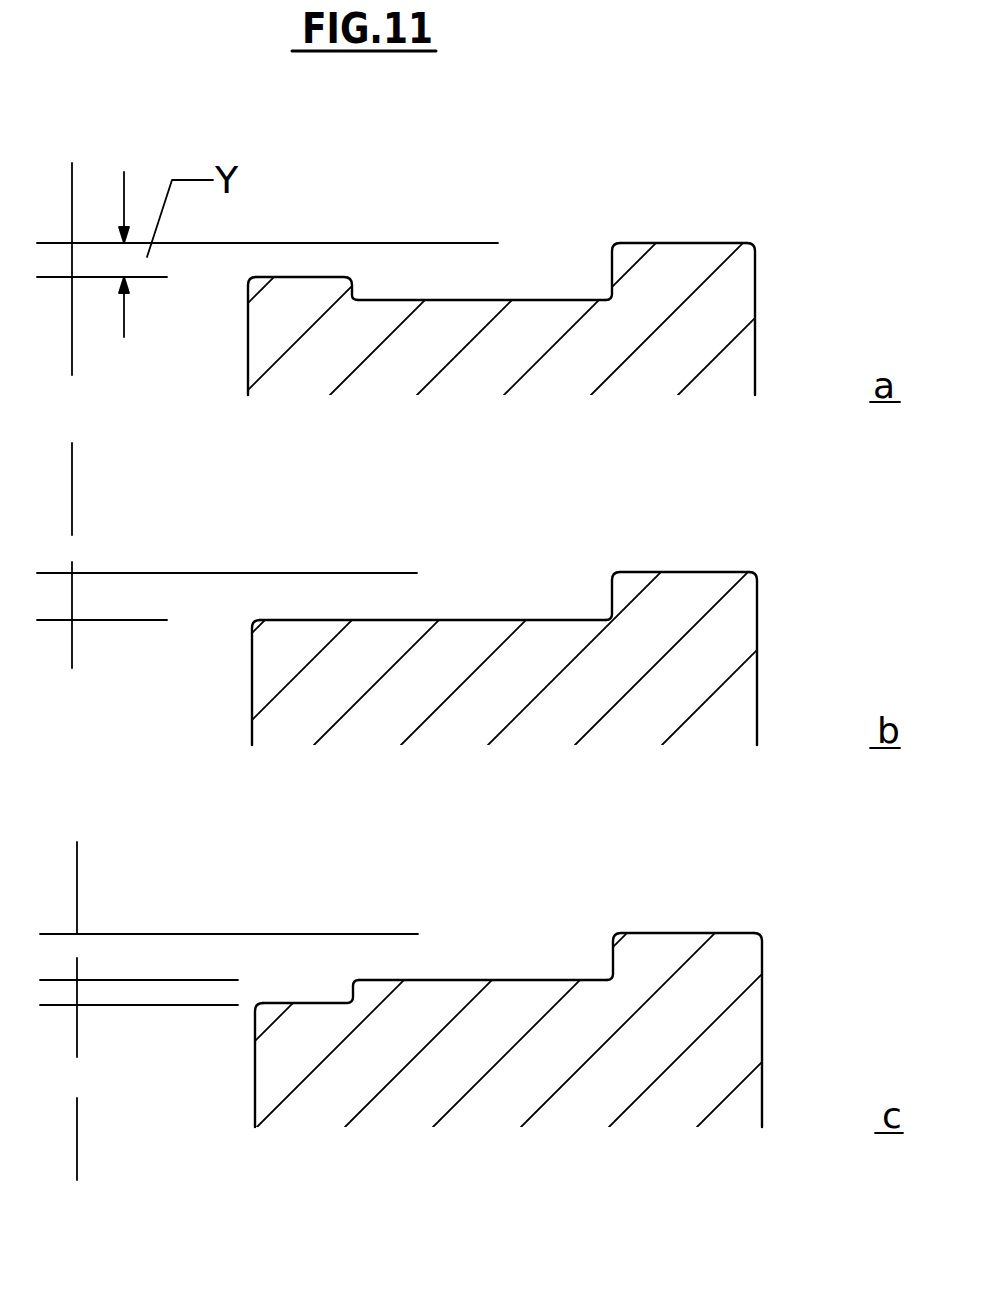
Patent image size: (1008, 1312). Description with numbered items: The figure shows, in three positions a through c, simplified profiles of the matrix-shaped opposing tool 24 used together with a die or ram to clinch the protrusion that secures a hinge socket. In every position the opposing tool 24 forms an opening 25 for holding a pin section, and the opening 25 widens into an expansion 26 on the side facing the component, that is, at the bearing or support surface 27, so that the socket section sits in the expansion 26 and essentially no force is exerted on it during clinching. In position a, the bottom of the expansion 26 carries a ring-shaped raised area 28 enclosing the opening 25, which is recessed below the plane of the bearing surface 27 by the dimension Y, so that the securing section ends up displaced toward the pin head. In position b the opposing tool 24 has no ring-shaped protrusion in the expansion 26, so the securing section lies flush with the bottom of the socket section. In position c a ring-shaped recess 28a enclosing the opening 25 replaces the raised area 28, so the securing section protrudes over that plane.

The opposing tool 24 is at (733, 305).
The opening 25 is at (197, 402).
The expansion 26 is at (508, 273).
The bearing surface 27 is at (719, 570).
The ring-shaped raised area 28 is at (343, 220).
The ring-shaped recess 28a is at (345, 930).